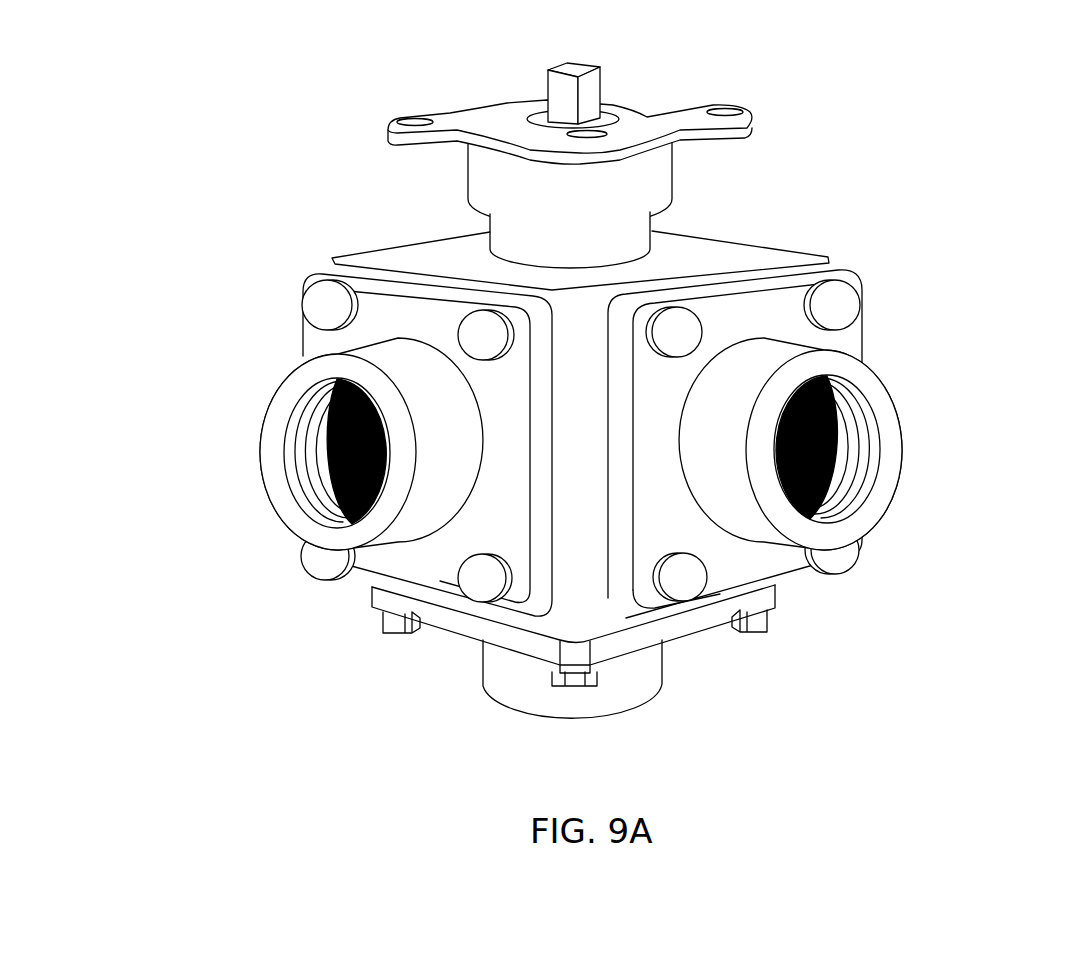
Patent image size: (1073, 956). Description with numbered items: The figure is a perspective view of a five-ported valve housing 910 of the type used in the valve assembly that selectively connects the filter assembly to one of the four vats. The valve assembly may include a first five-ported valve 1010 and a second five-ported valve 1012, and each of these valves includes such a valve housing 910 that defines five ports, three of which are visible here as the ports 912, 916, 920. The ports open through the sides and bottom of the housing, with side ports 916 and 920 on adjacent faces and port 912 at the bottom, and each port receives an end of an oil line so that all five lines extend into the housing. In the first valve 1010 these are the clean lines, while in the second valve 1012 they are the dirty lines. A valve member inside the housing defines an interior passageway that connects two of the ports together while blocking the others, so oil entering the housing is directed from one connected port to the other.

The first five-ported valve 1010 is at (579, 419).
The second five-ported valve 1012 is at (866, 109).
The valve housing 910 is at (750, 257).
The port 912 is at (548, 722).
The port 916 is at (838, 447).
The port 920 is at (315, 443).